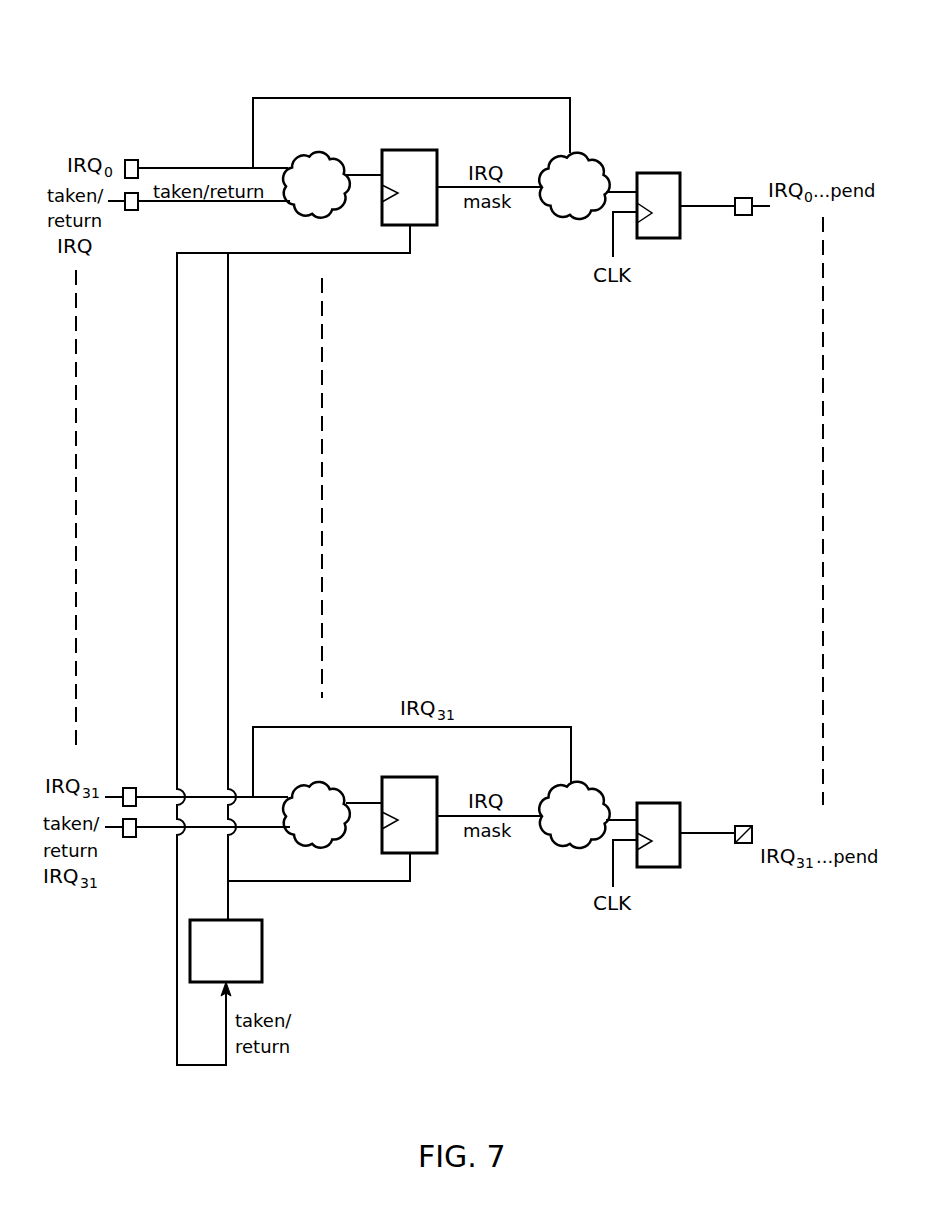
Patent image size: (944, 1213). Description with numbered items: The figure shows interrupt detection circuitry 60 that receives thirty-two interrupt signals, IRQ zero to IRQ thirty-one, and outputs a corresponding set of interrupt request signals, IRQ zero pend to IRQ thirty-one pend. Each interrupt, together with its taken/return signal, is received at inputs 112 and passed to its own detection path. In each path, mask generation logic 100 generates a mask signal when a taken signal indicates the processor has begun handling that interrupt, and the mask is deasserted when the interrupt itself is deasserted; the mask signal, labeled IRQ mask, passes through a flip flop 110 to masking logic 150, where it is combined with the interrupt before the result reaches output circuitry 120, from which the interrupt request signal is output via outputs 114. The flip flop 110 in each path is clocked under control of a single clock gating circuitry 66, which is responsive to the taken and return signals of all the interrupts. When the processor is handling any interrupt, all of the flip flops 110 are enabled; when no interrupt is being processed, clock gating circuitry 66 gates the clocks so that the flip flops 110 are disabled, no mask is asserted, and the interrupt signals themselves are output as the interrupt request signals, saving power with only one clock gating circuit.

The interrupt detection circuitry 60 is at (672, 65).
The inputs 112 is at (131, 160).
The mask generation logic 100 is at (326, 153).
The flip flop 110 is at (427, 227).
The mask logic 150 is at (588, 152).
The output circuitry 120 is at (660, 173).
The outputs 114 is at (753, 198).
The clock gating circuitry 66 is at (265, 952).